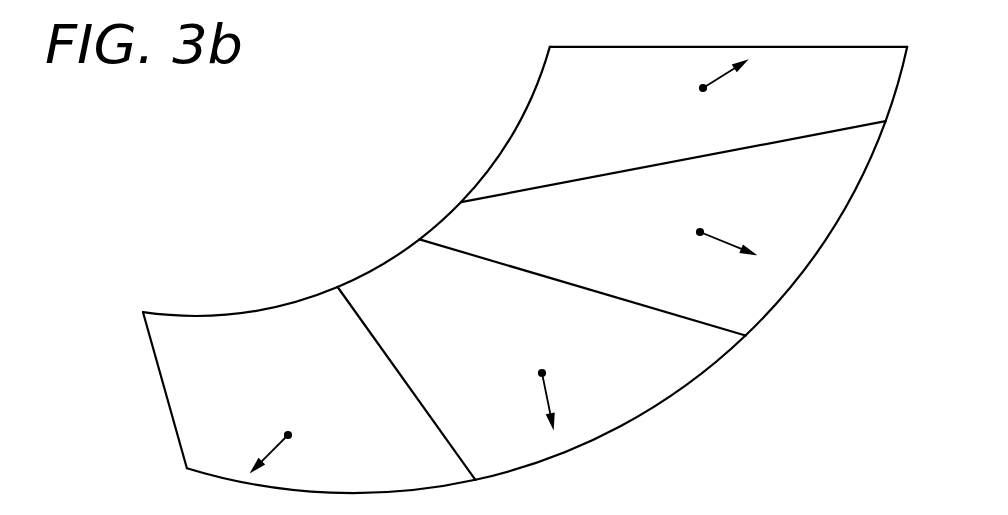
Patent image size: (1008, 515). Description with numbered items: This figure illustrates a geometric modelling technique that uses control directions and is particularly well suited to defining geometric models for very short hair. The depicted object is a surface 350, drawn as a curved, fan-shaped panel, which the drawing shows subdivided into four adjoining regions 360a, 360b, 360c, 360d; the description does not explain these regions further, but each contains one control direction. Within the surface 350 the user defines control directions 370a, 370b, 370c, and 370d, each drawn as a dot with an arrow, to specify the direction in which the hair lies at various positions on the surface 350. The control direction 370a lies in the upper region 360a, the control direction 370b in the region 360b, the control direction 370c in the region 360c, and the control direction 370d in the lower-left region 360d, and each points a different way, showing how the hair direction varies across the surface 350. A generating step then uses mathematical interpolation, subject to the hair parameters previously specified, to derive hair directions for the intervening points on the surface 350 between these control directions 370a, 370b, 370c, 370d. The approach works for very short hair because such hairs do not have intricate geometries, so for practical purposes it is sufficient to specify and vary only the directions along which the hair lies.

The surface 350 is at (320, 146).
The panel segment 360a is at (684, 124).
The panel segment 360b is at (653, 228).
The panel segment 360c is at (542, 359).
The panel segment 360d is at (309, 390).
The control direction 370a is at (706, 86).
The control direction 370b is at (720, 238).
The control direction 370c is at (544, 372).
The control direction 370d is at (290, 435).